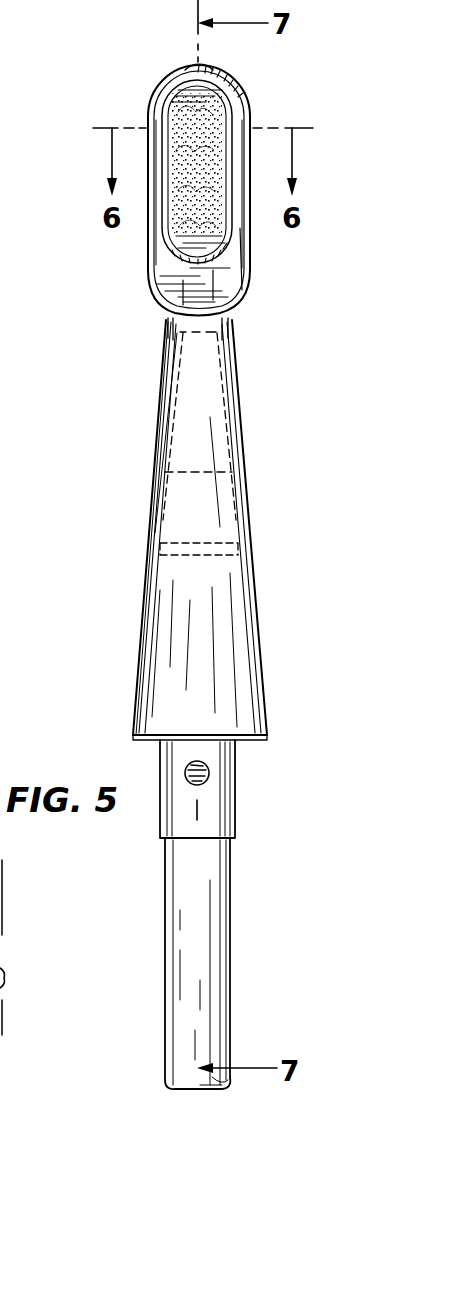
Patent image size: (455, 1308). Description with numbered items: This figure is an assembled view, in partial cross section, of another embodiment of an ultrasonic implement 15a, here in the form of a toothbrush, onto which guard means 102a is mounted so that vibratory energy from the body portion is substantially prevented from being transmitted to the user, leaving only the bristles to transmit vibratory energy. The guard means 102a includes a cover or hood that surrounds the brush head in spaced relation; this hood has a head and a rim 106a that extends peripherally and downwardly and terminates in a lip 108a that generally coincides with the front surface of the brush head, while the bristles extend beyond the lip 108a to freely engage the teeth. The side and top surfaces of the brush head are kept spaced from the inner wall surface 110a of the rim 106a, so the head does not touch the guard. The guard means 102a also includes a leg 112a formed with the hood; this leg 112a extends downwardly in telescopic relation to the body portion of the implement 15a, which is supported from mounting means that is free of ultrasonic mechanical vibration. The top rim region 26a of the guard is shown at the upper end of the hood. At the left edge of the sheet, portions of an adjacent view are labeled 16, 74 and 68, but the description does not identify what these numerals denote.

The ultrasonic implement 15a is at (262, 518).
The head rim 26a is at (196, 71).
The guard means 102a is at (249, 95).
The rim 106a is at (152, 240).
The lip 108a is at (163, 106).
The inner wall surface 110a is at (170, 183).
The leg 112a is at (252, 682).
The handle 16 is at (35, 907).
The coupling member 74 is at (8, 978).
The shaft 68 is at (2, 1055).